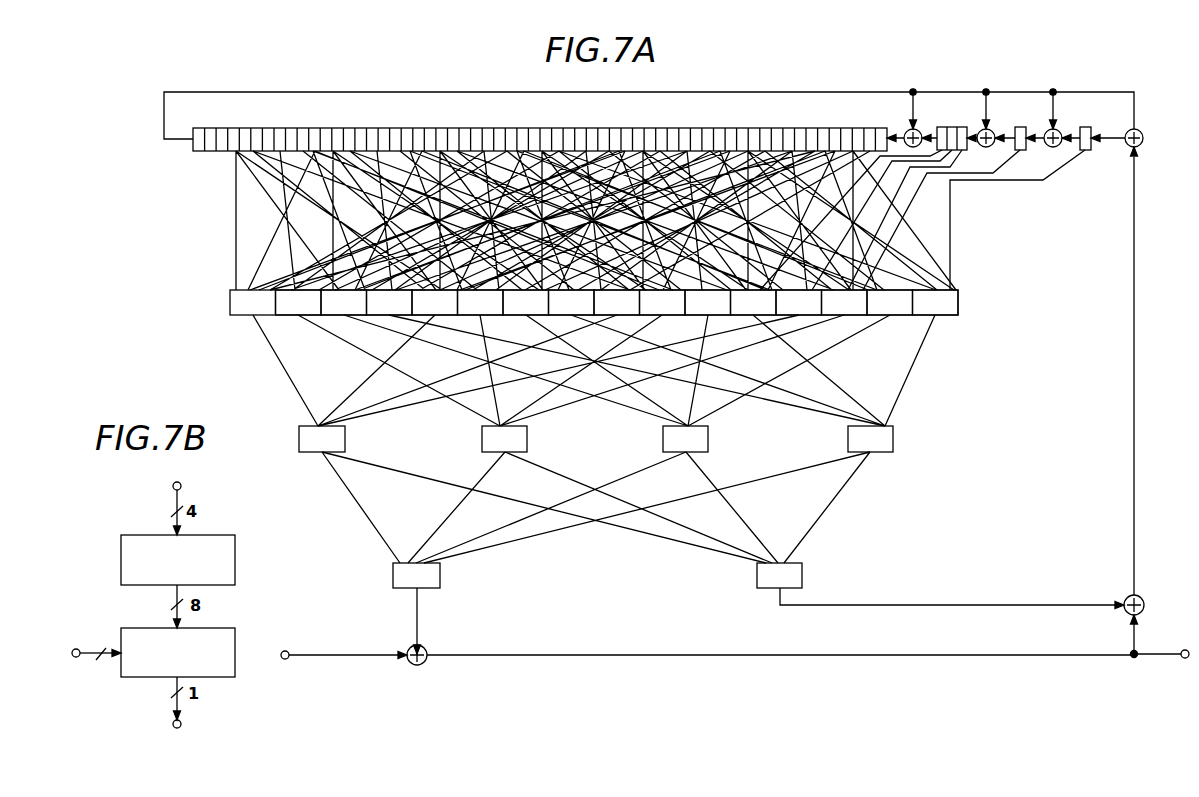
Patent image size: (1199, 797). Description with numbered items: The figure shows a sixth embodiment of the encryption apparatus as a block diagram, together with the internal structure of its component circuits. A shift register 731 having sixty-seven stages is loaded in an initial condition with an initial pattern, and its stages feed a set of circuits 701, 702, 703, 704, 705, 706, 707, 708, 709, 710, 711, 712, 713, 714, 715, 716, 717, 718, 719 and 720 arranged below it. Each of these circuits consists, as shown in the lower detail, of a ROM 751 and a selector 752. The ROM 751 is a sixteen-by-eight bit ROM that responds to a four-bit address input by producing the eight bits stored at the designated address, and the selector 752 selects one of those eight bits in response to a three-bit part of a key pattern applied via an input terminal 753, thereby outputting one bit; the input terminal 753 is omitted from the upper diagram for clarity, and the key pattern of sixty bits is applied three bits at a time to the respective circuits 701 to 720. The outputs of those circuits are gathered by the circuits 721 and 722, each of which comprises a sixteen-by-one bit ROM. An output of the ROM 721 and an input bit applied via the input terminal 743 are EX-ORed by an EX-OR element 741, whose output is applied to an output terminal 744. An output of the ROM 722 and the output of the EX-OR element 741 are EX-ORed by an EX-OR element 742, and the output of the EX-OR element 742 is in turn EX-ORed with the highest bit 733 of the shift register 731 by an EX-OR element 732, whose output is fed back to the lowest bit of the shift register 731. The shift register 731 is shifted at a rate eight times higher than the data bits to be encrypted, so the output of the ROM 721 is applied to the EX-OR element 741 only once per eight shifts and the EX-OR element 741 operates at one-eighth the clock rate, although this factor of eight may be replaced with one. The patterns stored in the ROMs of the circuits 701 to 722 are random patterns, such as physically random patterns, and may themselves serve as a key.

In FIG. 7A, the circuit 701 is at (230, 303).
In FIG. 7A, the circuit 702 is at (290, 316).
In FIG. 7A, the circuit 703 is at (340, 316).
In FIG. 7A, the circuit 704 is at (382, 316).
In FIG. 7A, the circuit 705 is at (440, 316).
In FIG. 7A, the circuit 706 is at (480, 316).
In FIG. 7A, the circuit 707 is at (530, 316).
In FIG. 7A, the circuit 708 is at (572, 316).
In FIG. 7A, the circuit 709 is at (623, 316).
In FIG. 7A, the circuit 710 is at (690, 316).
In FIG. 7A, the circuit 711 is at (704, 316).
In FIG. 7A, the circuit 712 is at (758, 316).
In FIG. 7A, the circuit 713 is at (814, 316).
In FIG. 7A, the circuit 714 is at (862, 316).
In FIG. 7A, the circuit 715 is at (907, 317).
In FIG. 7A, the circuit 716 is at (958, 300).
In FIG. 7A, the circuit 717 is at (300, 453).
In FIG. 7A, the circuit 718 is at (527, 440).
In FIG. 7A, the circuit 719 is at (708, 441).
In FIG. 7A, the circuit 720 is at (893, 441).
In FIG. 7A, the circuit 721 is at (393, 576).
In FIG. 7A, the circuit 722 is at (802, 578).
In FIG. 7A, the shift register 731 is at (195, 153).
In FIG. 7A, the EX-OR element 732 is at (1143, 133).
In FIG. 7A, the highest bit 733 is at (1136, 96).
In FIG. 7A, the EX-OR element 741 is at (424, 647).
In FIG. 7A, the EX-OR element 742 is at (1125, 598).
In FIG. 7A, the input terminal 743 is at (286, 651).
In FIG. 7A, the output terminal 744 is at (1182, 658).
In FIG. 7B, the ROM 751 is at (121, 560).
In FIG. 7B, the selector 752 is at (235, 655).
In FIG. 7B, the input terminal 753 is at (76, 657).